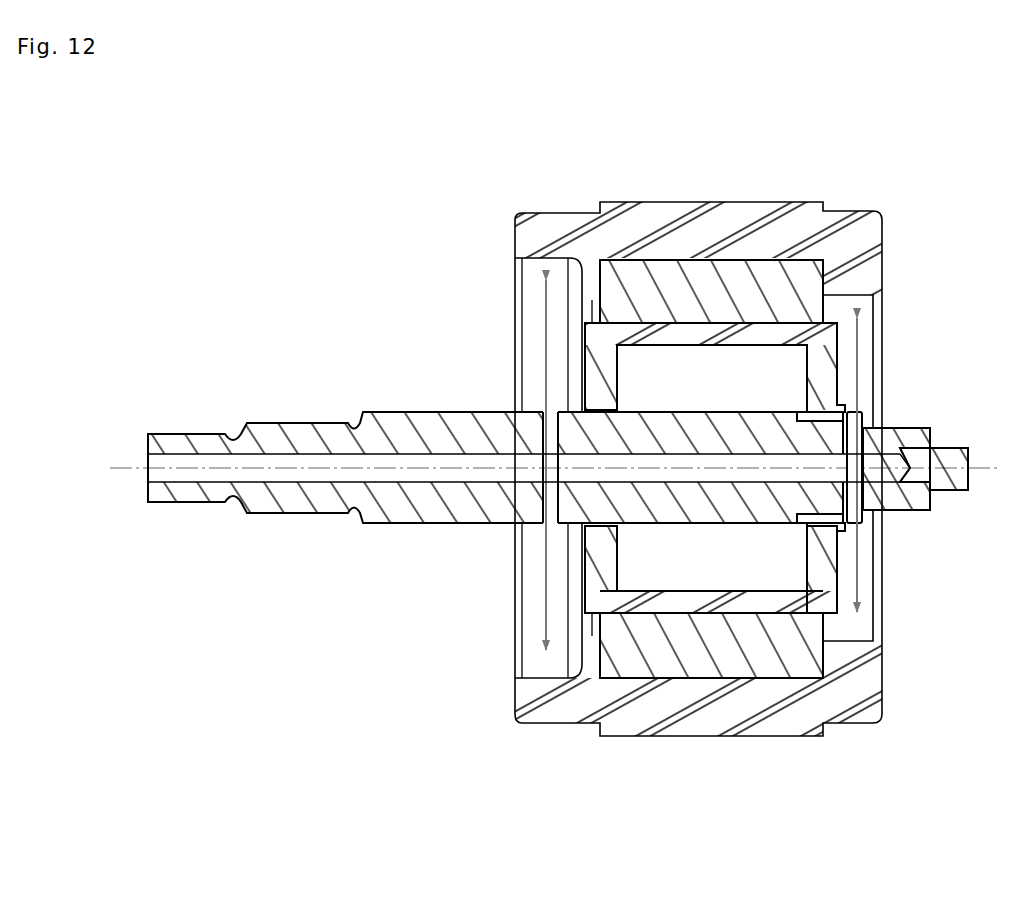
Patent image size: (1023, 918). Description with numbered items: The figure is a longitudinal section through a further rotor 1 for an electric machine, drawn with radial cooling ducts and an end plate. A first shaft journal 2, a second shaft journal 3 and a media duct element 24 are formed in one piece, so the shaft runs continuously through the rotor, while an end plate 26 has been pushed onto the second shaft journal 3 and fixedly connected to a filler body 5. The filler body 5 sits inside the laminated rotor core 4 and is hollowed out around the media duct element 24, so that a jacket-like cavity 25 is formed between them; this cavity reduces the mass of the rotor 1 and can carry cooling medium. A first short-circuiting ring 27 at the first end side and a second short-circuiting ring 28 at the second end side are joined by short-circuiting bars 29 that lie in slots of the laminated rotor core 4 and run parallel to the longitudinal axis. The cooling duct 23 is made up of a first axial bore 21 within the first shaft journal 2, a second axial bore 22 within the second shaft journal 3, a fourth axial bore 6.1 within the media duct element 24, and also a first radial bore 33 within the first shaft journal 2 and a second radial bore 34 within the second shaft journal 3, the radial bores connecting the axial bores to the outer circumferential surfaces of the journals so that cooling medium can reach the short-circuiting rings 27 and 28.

The rotor 1 is at (272, 207).
The first shaft journal 2 is at (385, 492).
The second shaft journal 3 is at (948, 450).
The laminated rotor core 4 is at (669, 283).
The filler body 5 is at (668, 606).
The fourth axial bore 6.1 is at (693, 463).
The first axial bore 21 is at (226, 458).
The second axial bore 22 is at (883, 477).
The cooling duct 23 is at (130, 480).
The media duct element 24 is at (727, 510).
The jacket-like cavity 25 is at (770, 577).
The end plate 26 is at (818, 570).
The first short-circuiting ring 27 is at (557, 242).
The second short-circuiting ring 28 is at (874, 241).
The short-circuiting bars 29 is at (757, 242).
The first radial bore 33 is at (552, 508).
The second radial bore 34 is at (862, 428).